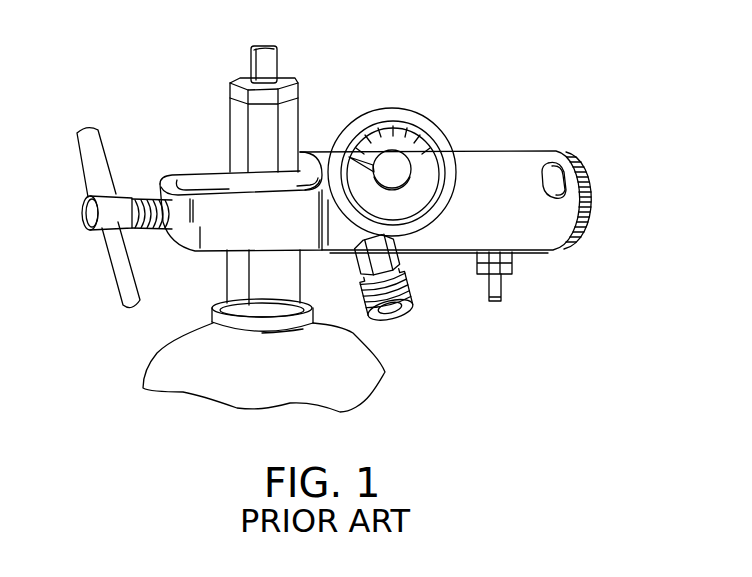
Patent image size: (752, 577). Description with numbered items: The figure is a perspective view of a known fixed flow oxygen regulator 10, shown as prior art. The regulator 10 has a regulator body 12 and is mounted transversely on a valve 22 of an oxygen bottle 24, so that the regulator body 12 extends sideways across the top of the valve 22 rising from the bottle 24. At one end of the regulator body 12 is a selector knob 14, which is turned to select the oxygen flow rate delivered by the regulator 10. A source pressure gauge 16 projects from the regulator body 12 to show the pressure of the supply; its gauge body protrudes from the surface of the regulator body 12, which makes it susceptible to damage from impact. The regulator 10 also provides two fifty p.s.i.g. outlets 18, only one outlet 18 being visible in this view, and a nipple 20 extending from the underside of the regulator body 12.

The oxygen regulator 10 is at (541, 158).
The regulator body 12 is at (481, 177).
The selector knob 14 is at (585, 190).
The source pressure gauge 16 is at (388, 130).
The outlet 18 is at (397, 322).
The nipple 20 is at (505, 289).
The valve 22 is at (245, 80).
The oxygen bottle 24 is at (185, 361).